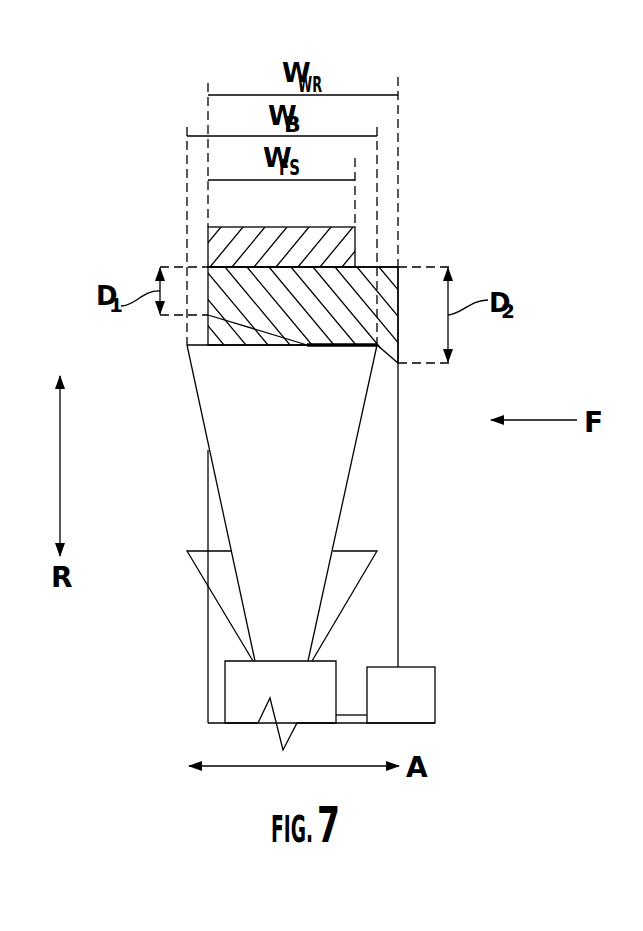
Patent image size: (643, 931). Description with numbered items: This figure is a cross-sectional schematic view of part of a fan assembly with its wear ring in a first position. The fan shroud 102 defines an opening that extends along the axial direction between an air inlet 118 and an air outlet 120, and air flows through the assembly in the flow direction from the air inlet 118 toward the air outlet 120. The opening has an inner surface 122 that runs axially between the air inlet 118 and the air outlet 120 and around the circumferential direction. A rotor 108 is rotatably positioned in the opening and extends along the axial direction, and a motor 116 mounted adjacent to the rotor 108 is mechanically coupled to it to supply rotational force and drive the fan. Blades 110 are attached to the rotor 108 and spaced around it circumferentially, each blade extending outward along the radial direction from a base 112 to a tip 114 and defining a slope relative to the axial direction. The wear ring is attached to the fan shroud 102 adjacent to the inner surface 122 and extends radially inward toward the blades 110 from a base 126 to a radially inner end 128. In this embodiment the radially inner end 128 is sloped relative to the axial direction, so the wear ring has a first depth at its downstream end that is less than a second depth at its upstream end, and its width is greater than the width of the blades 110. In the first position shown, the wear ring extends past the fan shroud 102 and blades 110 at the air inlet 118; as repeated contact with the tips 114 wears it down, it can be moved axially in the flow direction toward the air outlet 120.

The fan shroud 102 is at (256, 248).
The rotor 108 is at (253, 700).
The blades 110 is at (243, 458).
The base 112 is at (286, 654).
The tip 114 is at (268, 352).
The motor 116 is at (412, 698).
The air inlet 118 is at (392, 491).
The air outlet 120 is at (191, 512).
The inner surface 122 is at (272, 270).
The base 126 is at (206, 282).
The radially inner end 128 is at (271, 337).